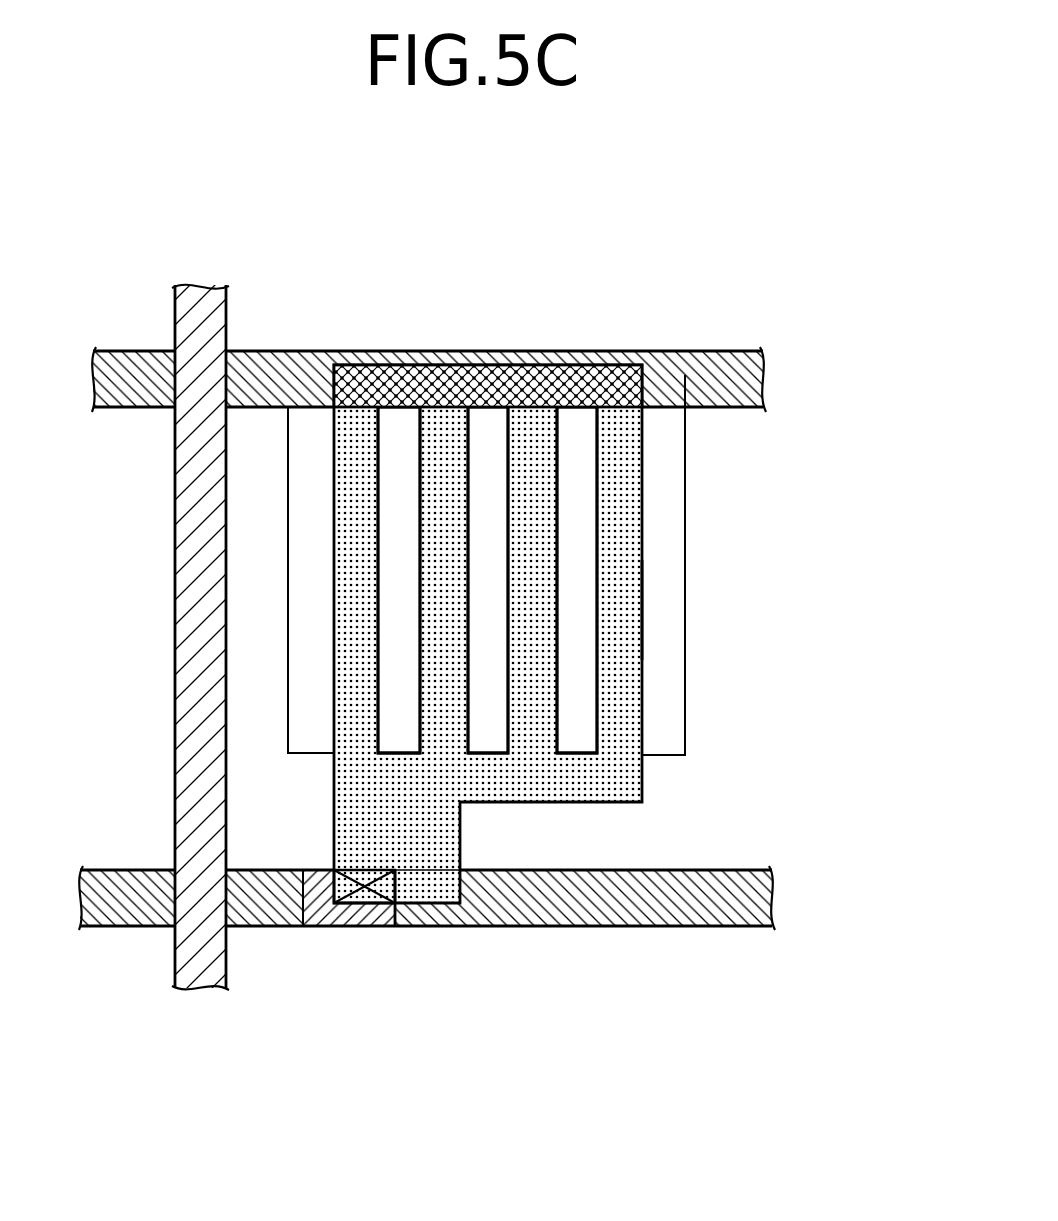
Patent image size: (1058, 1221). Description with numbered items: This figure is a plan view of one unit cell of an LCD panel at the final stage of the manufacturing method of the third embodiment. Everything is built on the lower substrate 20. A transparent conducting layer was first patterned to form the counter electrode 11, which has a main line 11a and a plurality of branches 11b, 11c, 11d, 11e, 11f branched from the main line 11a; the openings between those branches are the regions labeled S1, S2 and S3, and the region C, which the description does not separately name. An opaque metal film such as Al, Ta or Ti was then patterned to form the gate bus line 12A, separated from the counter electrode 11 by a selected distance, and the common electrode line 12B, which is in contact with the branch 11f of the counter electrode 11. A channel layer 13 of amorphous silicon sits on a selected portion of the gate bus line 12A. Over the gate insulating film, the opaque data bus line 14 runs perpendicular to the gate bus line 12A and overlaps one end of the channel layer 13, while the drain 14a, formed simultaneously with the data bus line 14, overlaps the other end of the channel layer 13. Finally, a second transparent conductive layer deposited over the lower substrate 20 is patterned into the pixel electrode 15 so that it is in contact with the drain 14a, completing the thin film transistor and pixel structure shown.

The lower substrate 20 is at (435, 543).
The first slit S1 is at (250, 518).
The second slit S2 is at (497, 570).
The third slit S3 is at (587, 572).
The contact region C is at (633, 377).
The counter electrode 11 is at (474, 500).
The main line 11a is at (665, 378).
The branch 11b is at (300, 615).
The branch 11c is at (393, 680).
The branch 11d is at (488, 735).
The branch 11e is at (577, 740).
The branch 11f is at (680, 722).
The gate bus line 12A is at (500, 946).
The common electrode line 12B is at (765, 378).
The channel layer 13 is at (268, 913).
The data bus line 14 is at (180, 764).
The drain 14a is at (353, 920).
The pixel electrode 15 is at (652, 612).